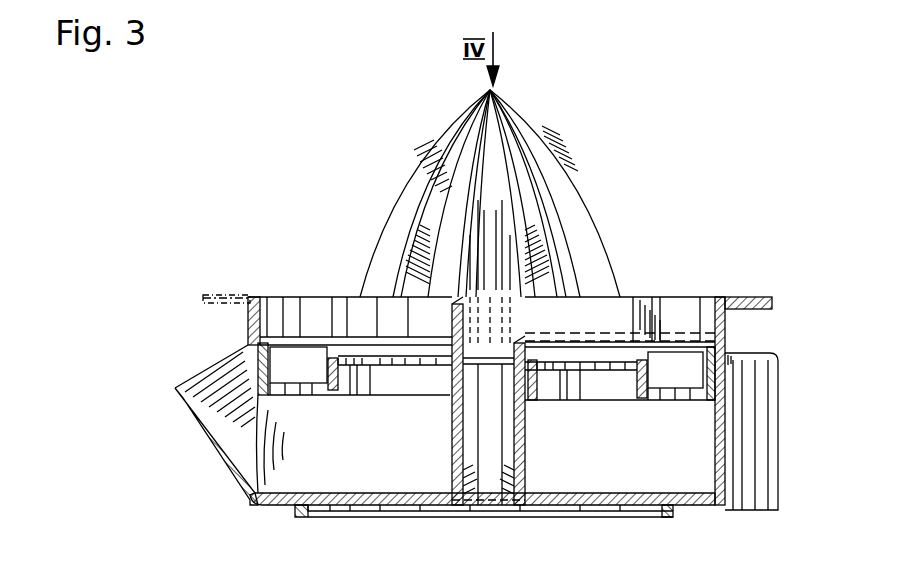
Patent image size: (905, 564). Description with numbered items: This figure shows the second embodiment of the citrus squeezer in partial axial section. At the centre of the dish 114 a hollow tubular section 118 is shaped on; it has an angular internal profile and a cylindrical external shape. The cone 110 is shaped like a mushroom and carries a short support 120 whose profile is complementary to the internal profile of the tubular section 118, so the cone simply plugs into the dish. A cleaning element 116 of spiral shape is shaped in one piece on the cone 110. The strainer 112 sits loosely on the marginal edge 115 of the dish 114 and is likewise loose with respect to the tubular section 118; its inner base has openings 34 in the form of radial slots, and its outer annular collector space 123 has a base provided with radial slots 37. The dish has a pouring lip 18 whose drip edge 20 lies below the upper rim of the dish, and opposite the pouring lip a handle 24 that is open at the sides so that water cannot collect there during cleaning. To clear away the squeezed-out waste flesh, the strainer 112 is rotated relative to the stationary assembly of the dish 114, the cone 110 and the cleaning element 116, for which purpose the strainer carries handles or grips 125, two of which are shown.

The cone 110 is at (572, 192).
The strainer 112 is at (358, 350).
The dish 114 is at (275, 505).
The marginal edge 115 is at (727, 340).
The cleaning element 116 is at (627, 307).
The hollow tubular section 118 is at (525, 460).
The short support 120 is at (523, 352).
The collector space 123 is at (320, 380).
The handles or grips 125 is at (228, 293).
The pouring lip 18 is at (197, 428).
The drip edge 20 is at (176, 388).
The handle 24 is at (762, 495).
The openings 34 is at (417, 366).
The radial slots 37 is at (310, 389).